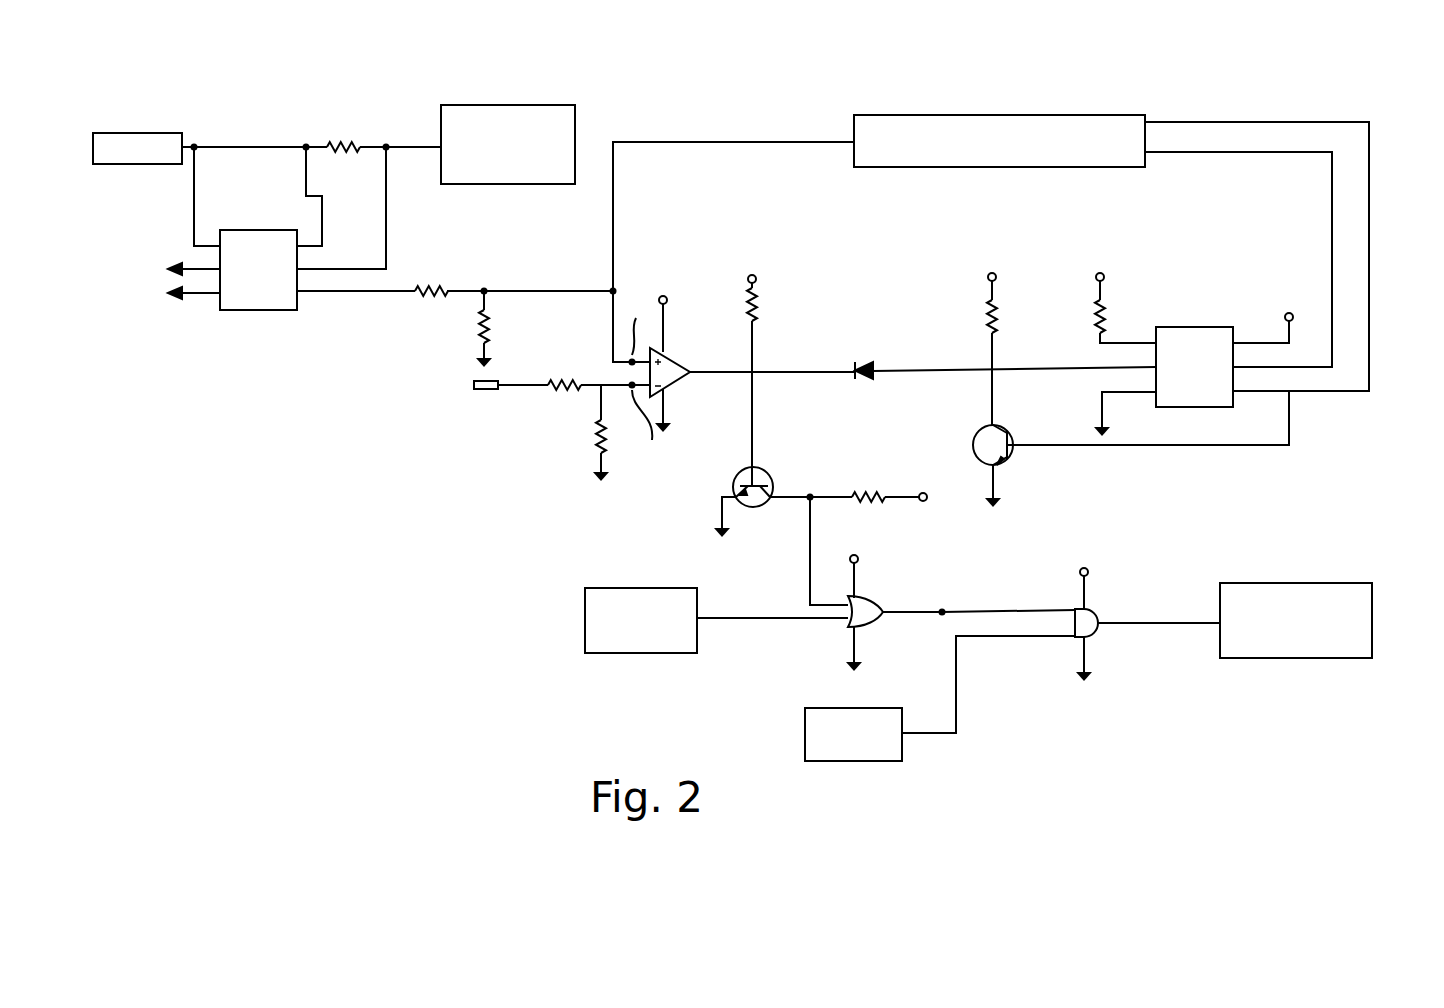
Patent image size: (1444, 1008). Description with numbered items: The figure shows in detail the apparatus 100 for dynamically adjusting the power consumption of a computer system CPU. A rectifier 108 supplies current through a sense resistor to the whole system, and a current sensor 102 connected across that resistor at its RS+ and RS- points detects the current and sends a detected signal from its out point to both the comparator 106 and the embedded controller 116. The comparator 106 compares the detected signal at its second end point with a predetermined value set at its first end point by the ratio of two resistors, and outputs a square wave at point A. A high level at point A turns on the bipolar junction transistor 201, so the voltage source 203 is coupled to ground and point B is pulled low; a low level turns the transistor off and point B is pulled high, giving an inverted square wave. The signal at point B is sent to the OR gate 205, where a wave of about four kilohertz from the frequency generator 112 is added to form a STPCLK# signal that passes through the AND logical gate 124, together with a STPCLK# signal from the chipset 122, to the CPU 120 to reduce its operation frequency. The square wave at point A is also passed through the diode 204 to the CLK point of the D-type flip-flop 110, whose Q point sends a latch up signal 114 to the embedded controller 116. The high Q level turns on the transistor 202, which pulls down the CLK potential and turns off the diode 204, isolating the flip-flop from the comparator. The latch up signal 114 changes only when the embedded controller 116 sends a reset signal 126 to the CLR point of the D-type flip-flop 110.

The apparatus for dynamically adjusting power consumption 100 is at (148, 31).
The current sensor 102 is at (262, 310).
The comparator 106 is at (672, 378).
The rectifier 108 is at (140, 133).
The D-type flip-flop 110 is at (1195, 327).
The frequency generator 112 is at (642, 588).
The latch up signal 114 is at (1369, 252).
The embedded controller 116 is at (1070, 118).
The CPU 120 is at (1297, 583).
The chipset 122 is at (883, 752).
The AND logical gate 124 is at (1098, 628).
The reset signal 126 is at (1332, 222).
The bipolar junction transistor 201 is at (766, 476).
The transistor 202 is at (1005, 430).
The voltage source 203 is at (924, 487).
The diode 204 is at (862, 360).
The OR gate 205 is at (866, 608).